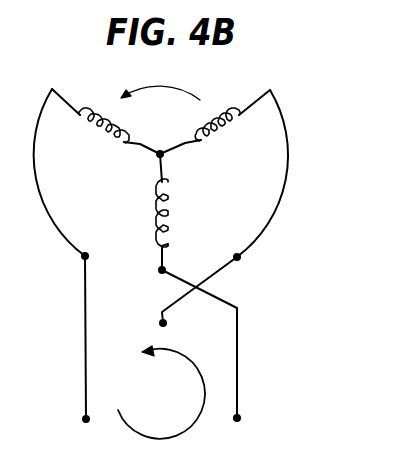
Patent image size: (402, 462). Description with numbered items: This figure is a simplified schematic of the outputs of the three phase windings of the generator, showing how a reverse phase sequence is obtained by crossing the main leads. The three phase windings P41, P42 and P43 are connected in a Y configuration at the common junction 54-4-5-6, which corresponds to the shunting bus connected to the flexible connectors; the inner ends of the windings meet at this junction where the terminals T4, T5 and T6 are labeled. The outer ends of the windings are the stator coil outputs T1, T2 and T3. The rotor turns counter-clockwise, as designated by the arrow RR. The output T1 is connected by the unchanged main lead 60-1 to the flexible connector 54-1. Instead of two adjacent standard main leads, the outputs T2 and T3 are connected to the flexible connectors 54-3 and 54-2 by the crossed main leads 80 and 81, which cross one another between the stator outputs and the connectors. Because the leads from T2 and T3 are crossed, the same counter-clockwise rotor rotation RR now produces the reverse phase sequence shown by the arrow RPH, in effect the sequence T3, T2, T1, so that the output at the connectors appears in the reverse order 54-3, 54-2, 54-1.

The first phase winding P41 is at (103, 108).
The second phase winding P42 is at (167, 215).
The third phase winding P43 is at (214, 134).
The stator coil output T1 is at (98, 253).
The stator coil output T2 is at (175, 255).
The stator coil output T3 is at (252, 264).
The fourth terminal T4 is at (157, 147).
The fifth terminal T5 is at (158, 174).
The sixth terminal T6 is at (175, 158).
The flexible connector 54-1 is at (86, 424).
The flexible connector 54-2 is at (161, 323).
The flexible connector 54-3 is at (240, 420).
The common junction 54-4-5-6 is at (162, 152).
The main lead 60-1 is at (85, 296).
The crossed main lead 80 is at (201, 293).
The crossed main lead 81 is at (225, 278).
The rotor rotation arrow RR is at (160, 79).
The reverse phase sequence arrow RPH is at (161, 392).